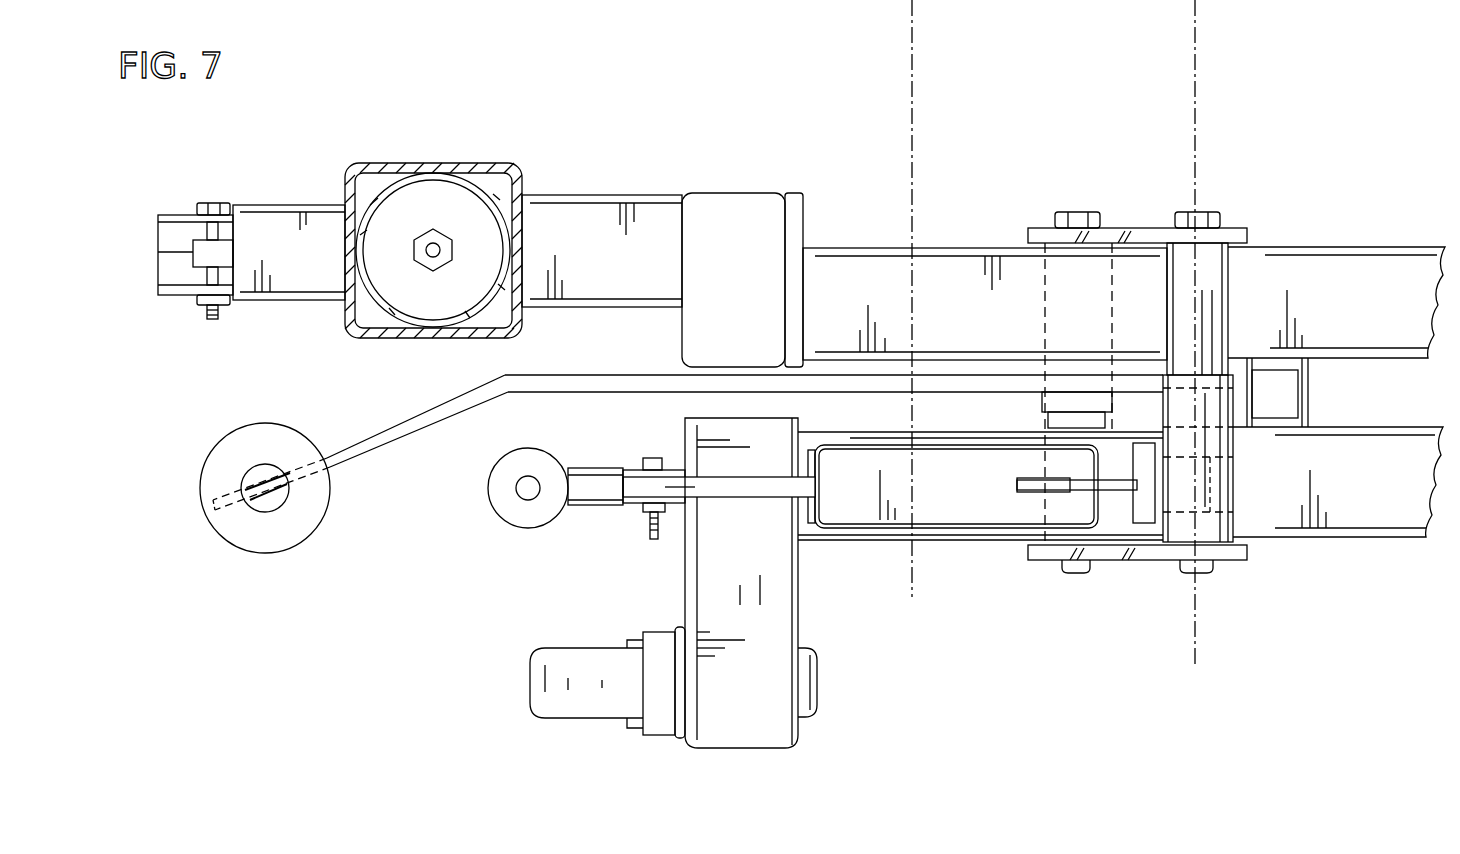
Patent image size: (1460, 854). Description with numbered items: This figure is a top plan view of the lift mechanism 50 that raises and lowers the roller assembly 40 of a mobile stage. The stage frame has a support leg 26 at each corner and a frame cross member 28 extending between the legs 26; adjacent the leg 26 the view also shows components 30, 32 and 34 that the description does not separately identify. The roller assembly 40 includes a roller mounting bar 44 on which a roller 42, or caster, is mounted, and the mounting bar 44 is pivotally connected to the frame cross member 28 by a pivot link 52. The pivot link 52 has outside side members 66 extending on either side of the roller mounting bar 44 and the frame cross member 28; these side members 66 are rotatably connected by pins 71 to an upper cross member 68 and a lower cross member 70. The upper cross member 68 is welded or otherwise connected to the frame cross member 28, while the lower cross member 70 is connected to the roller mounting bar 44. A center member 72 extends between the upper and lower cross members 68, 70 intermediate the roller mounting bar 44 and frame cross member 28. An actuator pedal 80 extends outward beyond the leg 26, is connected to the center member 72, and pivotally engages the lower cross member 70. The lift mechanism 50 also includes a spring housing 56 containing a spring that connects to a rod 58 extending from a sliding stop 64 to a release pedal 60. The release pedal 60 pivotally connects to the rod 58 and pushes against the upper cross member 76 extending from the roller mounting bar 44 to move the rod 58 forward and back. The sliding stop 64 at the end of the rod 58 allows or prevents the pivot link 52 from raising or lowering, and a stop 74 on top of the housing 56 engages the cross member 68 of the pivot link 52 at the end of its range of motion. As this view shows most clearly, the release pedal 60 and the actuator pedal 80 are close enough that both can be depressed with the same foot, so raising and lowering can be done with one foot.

The support leg 26 is at (400, 166).
The frame cross member 28 is at (835, 298).
The bearing 30 is at (465, 183).
The mounting bracket 32 is at (176, 293).
The arm 34 is at (598, 210).
The roller assembly 40 is at (1243, 163).
The roller 42 is at (530, 694).
The roller mounting bar 44 is at (1368, 493).
The lift mechanism 50 is at (1000, 162).
The pivot link 52 is at (1283, 233).
The spring housing 56 is at (835, 493).
The rod 58 is at (700, 475).
The release pedal 60 is at (548, 458).
The sliding stop 64 is at (1215, 468).
The side member 66 is at (1245, 228).
The upper cross member 68 is at (1228, 290).
The lower cross member 70 is at (1042, 402).
The pin 71 is at (1072, 573).
The center member 72 is at (1308, 402).
The stop 74 is at (1017, 484).
The upper cross member 76 is at (725, 568).
The actuator pedal 80 is at (313, 522).